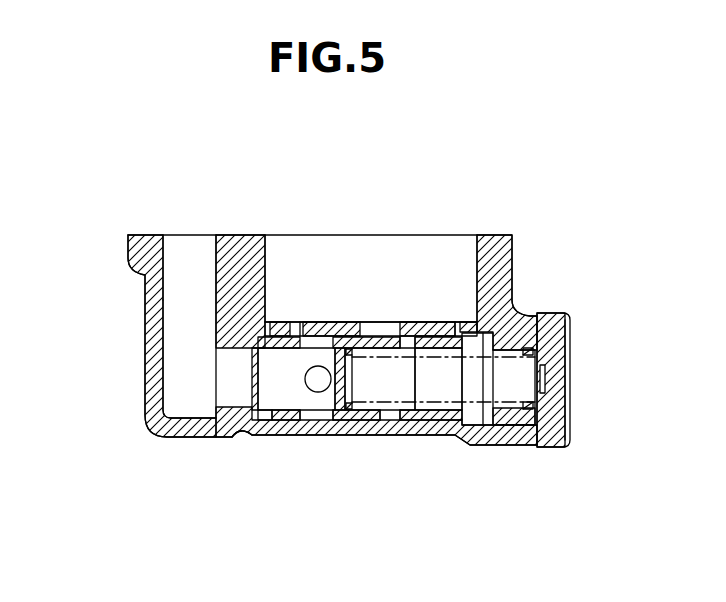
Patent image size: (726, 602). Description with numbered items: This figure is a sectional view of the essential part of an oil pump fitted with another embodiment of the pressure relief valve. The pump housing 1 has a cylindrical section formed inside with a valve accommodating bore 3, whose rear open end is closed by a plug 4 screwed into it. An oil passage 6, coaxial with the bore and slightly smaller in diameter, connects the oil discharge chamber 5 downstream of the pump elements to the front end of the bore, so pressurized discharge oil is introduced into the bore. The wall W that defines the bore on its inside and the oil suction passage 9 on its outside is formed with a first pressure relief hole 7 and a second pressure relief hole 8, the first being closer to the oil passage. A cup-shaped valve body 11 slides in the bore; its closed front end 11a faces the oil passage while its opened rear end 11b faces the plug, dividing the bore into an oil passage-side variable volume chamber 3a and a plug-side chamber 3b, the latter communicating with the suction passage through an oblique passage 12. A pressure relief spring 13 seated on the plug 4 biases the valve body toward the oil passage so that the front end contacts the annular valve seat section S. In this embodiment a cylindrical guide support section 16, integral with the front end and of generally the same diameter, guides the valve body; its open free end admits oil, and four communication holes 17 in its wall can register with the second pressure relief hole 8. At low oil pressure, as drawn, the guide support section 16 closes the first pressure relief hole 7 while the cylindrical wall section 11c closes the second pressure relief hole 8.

The pump housing 1 is at (170, 430).
The valve accommodating bore 3 is at (473, 415).
The oil passage-side variable volume chamber 3a is at (233, 432).
The plug-side chamber 3b is at (472, 432).
The plug 4 is at (553, 420).
The oil discharge chamber 5 is at (175, 300).
The oil passage 6 is at (235, 375).
The first pressure relief hole 7 is at (282, 330).
The second pressure relief hole 8 is at (387, 308).
The oil suction passage 9 is at (312, 258).
The valve body 11 is at (367, 432).
The front end 11a is at (337, 432).
The rear end 11b is at (407, 340).
The cylindrical wall section 11c is at (390, 432).
The passage 12 is at (460, 320).
The pressure relief spring 13 is at (535, 350).
The guide support section 16 is at (275, 432).
The communication holes 17 is at (322, 337).
The annular valve seat section S is at (258, 342).
The wall W is at (301, 320).